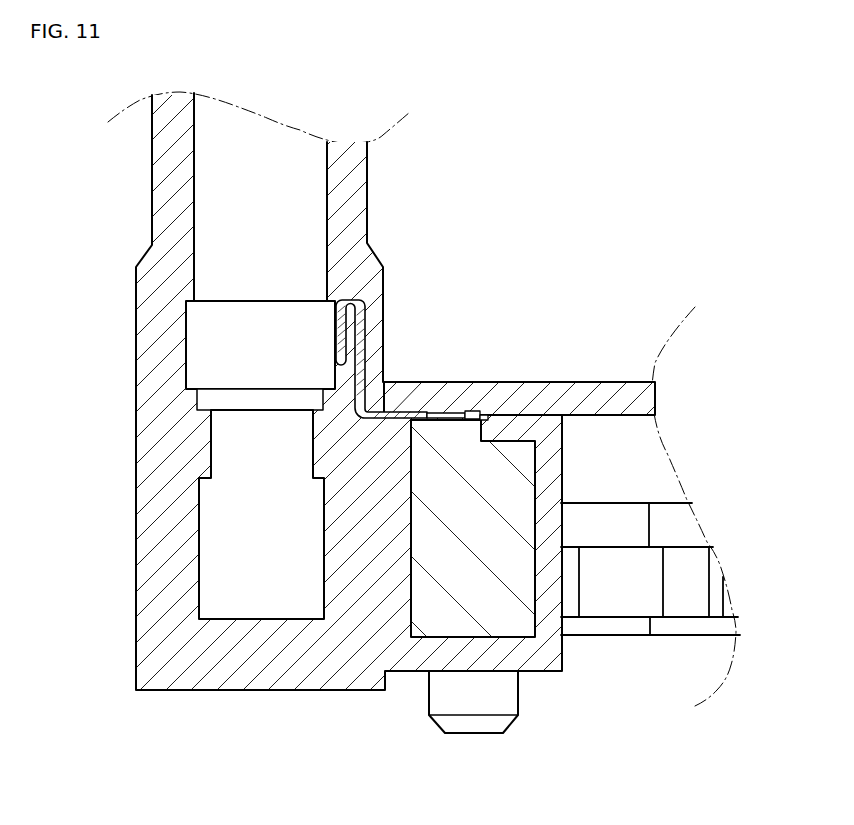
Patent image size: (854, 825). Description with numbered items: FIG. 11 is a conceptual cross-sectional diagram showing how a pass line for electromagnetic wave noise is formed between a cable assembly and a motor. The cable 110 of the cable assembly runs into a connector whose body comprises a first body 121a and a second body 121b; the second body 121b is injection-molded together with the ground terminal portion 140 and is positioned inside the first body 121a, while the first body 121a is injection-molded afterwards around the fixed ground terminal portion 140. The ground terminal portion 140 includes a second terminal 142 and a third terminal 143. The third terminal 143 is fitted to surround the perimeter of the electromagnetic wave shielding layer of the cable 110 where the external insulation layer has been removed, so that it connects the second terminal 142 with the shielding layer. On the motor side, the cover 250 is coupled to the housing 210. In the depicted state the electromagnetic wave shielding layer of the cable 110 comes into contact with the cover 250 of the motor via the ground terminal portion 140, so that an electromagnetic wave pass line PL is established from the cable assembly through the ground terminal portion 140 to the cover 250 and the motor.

The cable 110 is at (193, 152).
The first body 121a is at (387, 273).
The second body 121b is at (445, 613).
The ground terminal portion 140 is at (378, 323).
The second terminal 142 is at (450, 412).
The third terminal 143 is at (185, 343).
The cover 250 is at (605, 396).
The housing 210 is at (503, 697).
The electromagnetic wave pass line PL is at (437, 413).